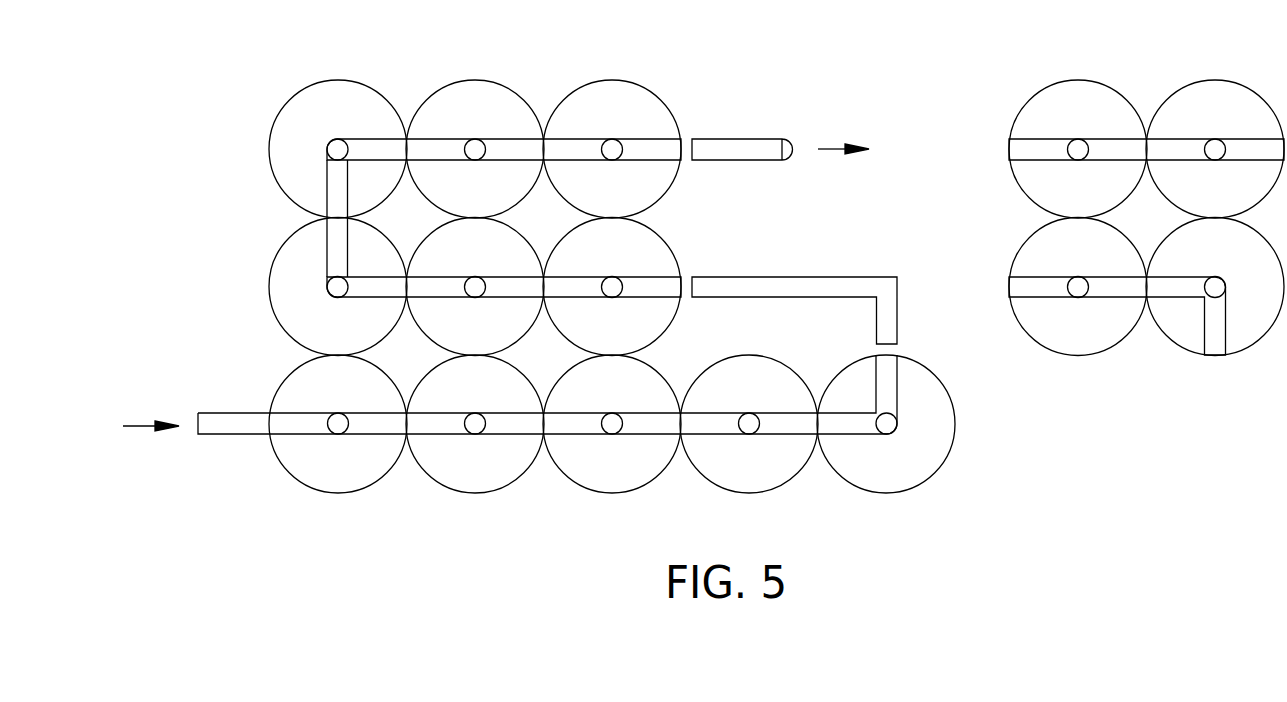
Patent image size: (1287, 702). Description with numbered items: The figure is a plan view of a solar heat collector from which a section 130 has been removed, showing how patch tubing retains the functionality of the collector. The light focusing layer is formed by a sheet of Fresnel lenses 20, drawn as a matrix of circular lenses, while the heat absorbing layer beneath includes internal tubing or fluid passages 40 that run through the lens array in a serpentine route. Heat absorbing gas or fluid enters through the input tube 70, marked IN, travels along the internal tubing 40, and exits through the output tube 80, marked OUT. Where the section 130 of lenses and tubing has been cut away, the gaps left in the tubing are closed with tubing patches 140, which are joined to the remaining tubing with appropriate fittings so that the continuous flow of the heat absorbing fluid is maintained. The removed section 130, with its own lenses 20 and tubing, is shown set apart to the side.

The Fresnel lenses 20 is at (303, 101).
The internal tubing 40 is at (327, 180).
The input tube 70 is at (139, 424).
The output tube 80 is at (830, 148).
The section 130 is at (1162, 51).
The tubing patches 140 is at (733, 138).